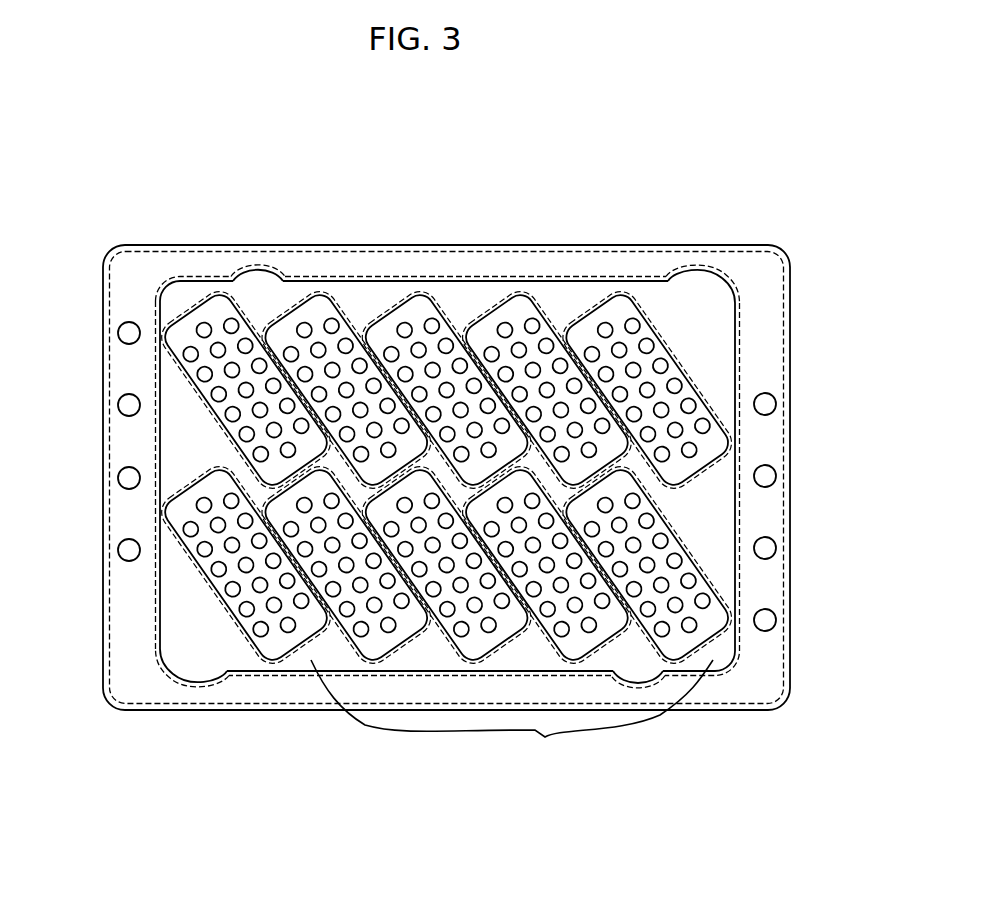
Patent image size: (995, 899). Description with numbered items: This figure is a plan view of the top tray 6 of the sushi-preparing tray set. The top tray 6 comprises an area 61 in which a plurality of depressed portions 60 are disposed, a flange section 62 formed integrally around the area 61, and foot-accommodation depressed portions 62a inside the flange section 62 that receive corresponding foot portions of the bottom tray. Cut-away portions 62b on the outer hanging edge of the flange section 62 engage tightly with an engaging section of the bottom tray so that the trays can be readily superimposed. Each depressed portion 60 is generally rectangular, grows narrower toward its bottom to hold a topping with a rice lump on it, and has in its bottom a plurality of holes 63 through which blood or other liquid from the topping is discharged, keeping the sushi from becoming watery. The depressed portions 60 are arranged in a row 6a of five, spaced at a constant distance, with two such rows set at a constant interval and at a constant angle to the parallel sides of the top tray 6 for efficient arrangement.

The top tray 6 is at (370, 230).
The row 6a is at (512, 717).
The depressed portions 60 is at (673, 362).
The area 61 is at (565, 302).
The flange section 62 is at (478, 265).
The foot-accommodation depressed portions 62a is at (261, 278).
The cut-away portions 62b is at (274, 250).
The holes 63 is at (633, 327).